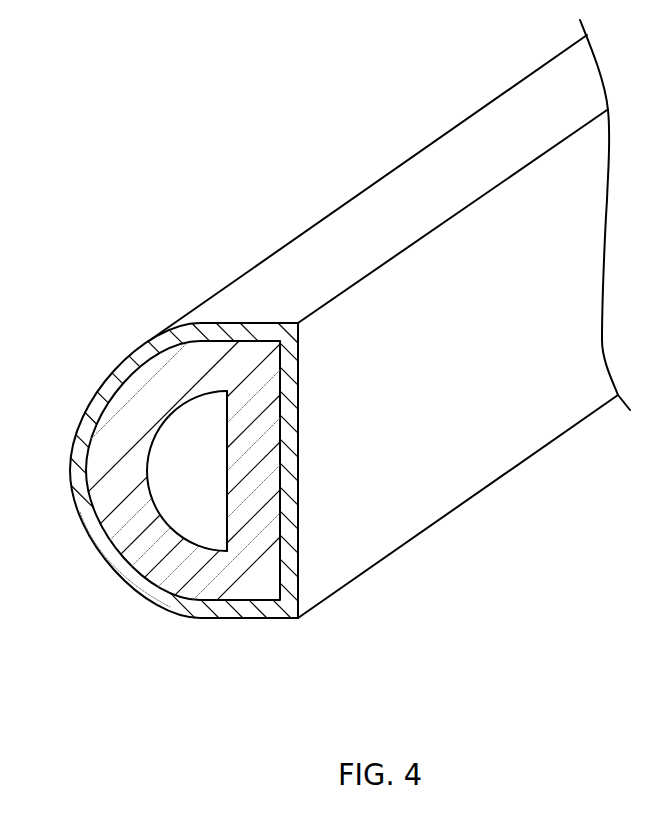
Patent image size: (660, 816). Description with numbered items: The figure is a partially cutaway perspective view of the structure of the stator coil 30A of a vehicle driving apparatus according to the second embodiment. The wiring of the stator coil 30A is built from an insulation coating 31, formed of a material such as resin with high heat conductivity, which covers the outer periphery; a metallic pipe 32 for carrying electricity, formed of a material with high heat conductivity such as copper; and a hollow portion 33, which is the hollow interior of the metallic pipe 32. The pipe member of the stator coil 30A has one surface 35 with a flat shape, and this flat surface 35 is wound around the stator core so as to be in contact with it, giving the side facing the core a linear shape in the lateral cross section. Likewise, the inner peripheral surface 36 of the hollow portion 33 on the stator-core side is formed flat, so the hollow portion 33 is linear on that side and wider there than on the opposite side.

The stator coil 30A is at (278, 131).
The insulation coating 31 is at (97, 387).
The metallic pipe 32 is at (196, 592).
The hollow portion 33 is at (167, 482).
The flat surface 35 is at (415, 480).
The inner peripheral surface 36 is at (201, 488).